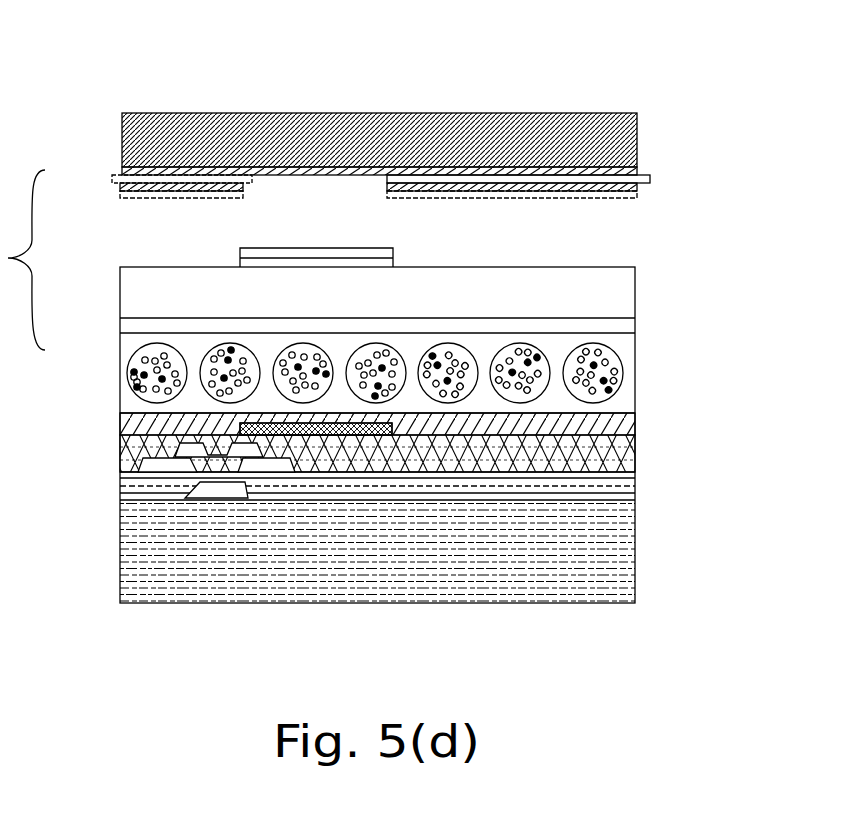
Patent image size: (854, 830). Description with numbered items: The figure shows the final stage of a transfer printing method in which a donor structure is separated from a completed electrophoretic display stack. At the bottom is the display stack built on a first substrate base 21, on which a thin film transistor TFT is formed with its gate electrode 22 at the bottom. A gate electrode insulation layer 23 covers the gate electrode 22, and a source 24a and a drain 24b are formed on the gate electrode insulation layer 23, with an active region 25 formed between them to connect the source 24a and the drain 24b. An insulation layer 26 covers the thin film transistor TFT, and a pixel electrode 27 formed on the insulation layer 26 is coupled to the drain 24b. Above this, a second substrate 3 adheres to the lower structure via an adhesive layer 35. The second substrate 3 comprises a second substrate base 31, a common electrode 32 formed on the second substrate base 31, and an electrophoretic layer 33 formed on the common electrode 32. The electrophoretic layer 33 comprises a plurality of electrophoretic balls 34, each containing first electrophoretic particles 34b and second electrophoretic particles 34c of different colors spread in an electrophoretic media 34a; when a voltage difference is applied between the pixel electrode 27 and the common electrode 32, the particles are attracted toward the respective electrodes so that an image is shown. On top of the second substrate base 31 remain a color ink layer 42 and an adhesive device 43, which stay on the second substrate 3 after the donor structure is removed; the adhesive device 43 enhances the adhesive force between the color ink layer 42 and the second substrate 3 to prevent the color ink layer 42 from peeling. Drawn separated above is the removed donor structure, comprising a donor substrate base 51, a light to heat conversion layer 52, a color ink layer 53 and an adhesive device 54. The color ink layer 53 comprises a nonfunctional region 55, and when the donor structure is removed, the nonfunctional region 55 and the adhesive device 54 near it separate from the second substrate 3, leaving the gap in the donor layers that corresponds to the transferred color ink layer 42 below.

The donor substrate base 51 is at (637, 132).
The light to heat conversion layer 52 is at (640, 172).
The color ink layer 53 is at (650, 181).
The adhesive device 54 is at (640, 192).
The nonfunctional region 55 is at (415, 92).
The color ink layer 42 is at (393, 250).
The adhesive device 43 is at (393, 262).
The second substrate base 31 is at (637, 293).
The common electrode 32 is at (637, 323).
The electrophoretic layer 33 is at (637, 388).
The electrophoretic ball 34 is at (620, 362).
The electrophoretic media 34a is at (128, 360).
The first electrophoretic particles 34b is at (132, 377).
The second electrophoretic particles 34c is at (135, 388).
The second substrate 3 is at (697, 272).
The adhesive layer 35 is at (637, 420).
The pixel electrode 27 is at (340, 440).
The insulation layer 26 is at (637, 446).
The gate electrode insulation layer 23 is at (637, 478).
The first substrate base 21 is at (637, 520).
The gate electrode 22 is at (218, 488).
The active region 25 is at (198, 462).
The source 24a is at (160, 465).
The drain 24b is at (257, 468).
The thin film transistor TFT is at (184, 565).